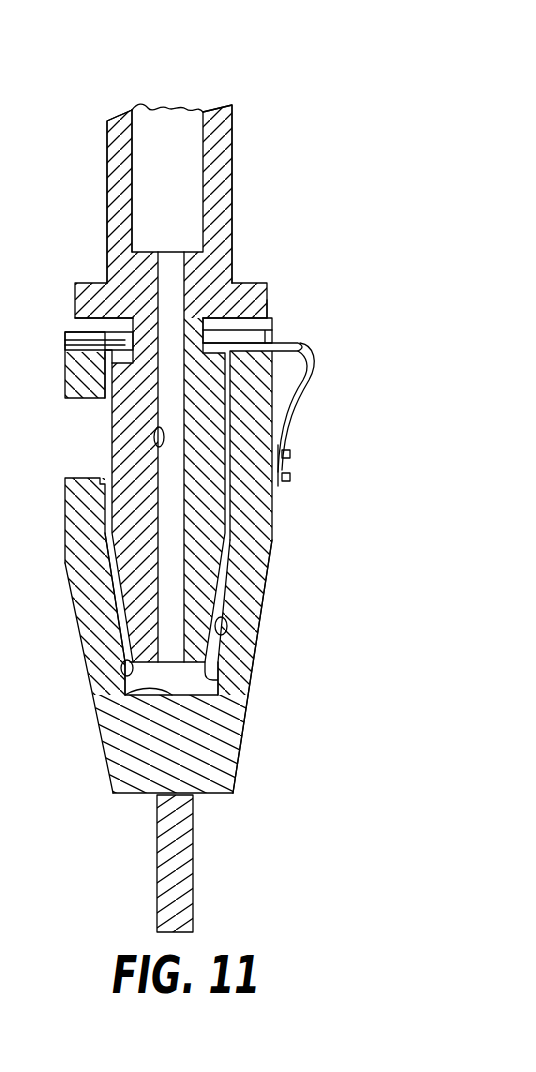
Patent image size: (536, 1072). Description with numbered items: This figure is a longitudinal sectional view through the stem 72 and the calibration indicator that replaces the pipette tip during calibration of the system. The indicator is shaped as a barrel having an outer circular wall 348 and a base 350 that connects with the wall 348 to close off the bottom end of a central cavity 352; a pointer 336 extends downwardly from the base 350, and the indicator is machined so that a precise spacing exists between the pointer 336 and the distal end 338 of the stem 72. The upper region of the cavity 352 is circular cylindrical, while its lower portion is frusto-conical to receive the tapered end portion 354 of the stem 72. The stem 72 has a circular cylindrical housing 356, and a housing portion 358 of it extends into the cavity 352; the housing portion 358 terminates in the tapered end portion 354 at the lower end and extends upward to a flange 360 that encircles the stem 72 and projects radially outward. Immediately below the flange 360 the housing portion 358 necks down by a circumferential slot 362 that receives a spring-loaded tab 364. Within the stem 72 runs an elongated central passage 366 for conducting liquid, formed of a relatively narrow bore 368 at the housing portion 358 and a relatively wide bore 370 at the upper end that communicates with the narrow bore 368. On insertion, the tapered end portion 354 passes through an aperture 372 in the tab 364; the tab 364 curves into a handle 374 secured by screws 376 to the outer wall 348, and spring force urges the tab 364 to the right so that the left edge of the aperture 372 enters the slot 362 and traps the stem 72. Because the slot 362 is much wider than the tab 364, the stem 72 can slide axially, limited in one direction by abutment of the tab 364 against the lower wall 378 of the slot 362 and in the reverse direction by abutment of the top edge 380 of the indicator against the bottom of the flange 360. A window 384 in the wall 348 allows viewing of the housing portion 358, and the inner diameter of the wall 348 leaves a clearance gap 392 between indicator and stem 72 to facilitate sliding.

The stem 72 is at (240, 187).
The pointer 336 is at (197, 872).
The distal end of the stem 338 is at (213, 680).
The outer circular wall 348 is at (125, 675).
The base 350 is at (128, 697).
The central cavity 352 is at (230, 626).
The tapered end portion 354 is at (125, 604).
The circular cylindrical housing 356 is at (233, 214).
The housing portion 358 is at (112, 428).
The flange 360 is at (248, 283).
The circumferential slot 362 is at (98, 323).
The spring-loaded tab 364 is at (306, 346).
The central passage 366 is at (197, 160).
The narrow bore 368 is at (158, 440).
The wide bore 370 is at (136, 151).
The aperture 372 is at (266, 310).
The handle 374 is at (303, 403).
The screws 376 is at (291, 477).
The lower wall of the slot 378 is at (108, 357).
The top edge of the indicator 380 is at (242, 340).
The window 384 is at (93, 403).
The clearance gap 392 is at (105, 490).